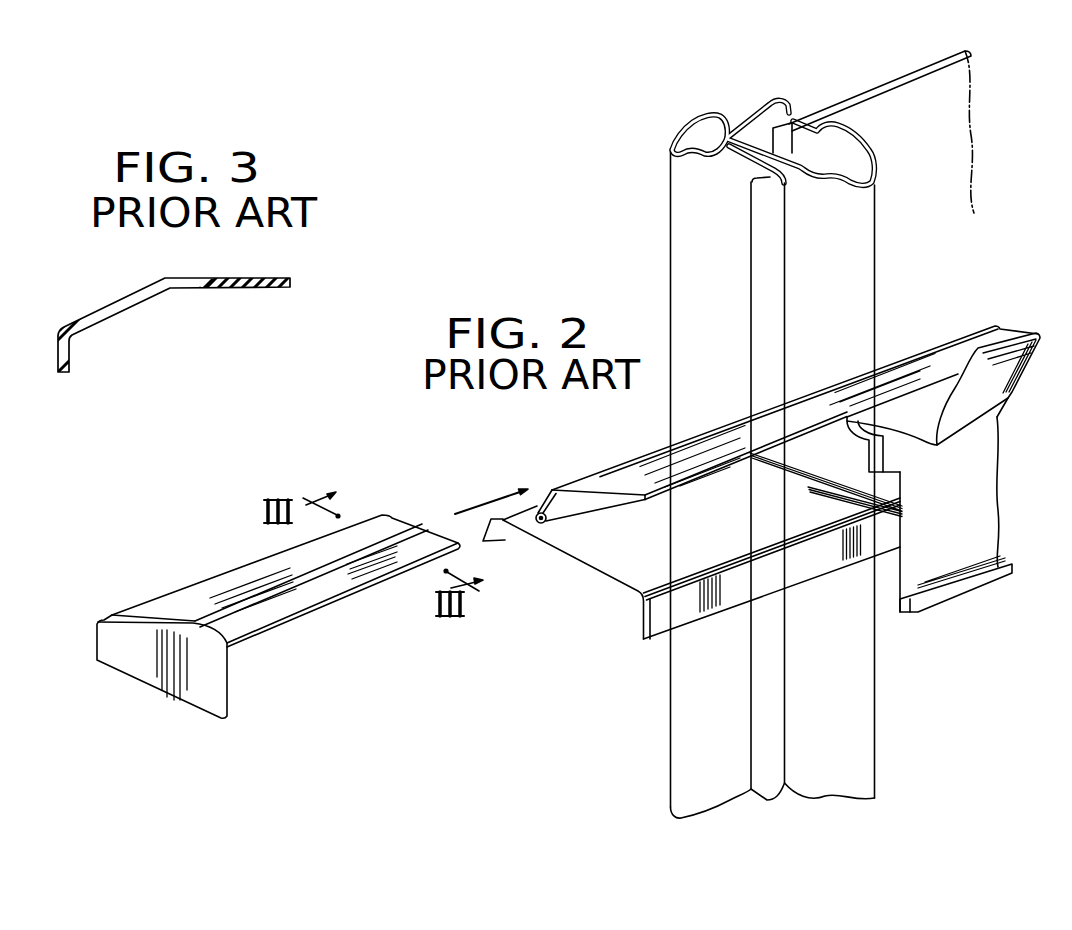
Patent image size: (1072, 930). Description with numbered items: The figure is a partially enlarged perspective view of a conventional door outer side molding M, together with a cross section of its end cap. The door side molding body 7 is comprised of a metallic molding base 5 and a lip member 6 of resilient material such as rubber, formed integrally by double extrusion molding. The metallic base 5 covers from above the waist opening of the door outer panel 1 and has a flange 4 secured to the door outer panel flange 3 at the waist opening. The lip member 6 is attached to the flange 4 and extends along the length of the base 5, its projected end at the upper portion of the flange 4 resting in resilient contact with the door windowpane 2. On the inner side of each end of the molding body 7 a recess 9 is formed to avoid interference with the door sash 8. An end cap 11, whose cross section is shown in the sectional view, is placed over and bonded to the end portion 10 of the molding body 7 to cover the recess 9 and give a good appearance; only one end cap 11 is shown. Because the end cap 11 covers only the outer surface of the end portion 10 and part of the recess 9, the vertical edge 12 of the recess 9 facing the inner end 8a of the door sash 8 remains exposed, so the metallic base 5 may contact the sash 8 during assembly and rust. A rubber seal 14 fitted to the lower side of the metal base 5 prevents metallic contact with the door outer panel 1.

In FIG. 2, the door outer panel 1 is at (610, 563).
In FIG. 2, the door windowpane 2 is at (964, 137).
In FIG. 2, the door outer panel flange 3 is at (643, 627).
In FIG. 2, the flange 4 is at (897, 578).
In FIG. 2, the metallic molding base 5 is at (923, 365).
In FIG. 2, the lip member 6 is at (1000, 412).
In FIG. 2, the door side molding body 7 is at (975, 529).
In FIG. 2, the door sash 8 is at (682, 131).
In FIG. 2, the inner end of door sash 8a is at (793, 107).
In FIG. 2, the recess 9 is at (731, 470).
In FIG. 2, the end portion 10 is at (626, 476).
In FIG. 3, the end cap 11 is at (111, 303).
In FIG. 2, the end cap 11 is at (203, 587).
In FIG. 2, the vertical edge 12 is at (868, 457).
In FIG. 2, the rubber seal 14 is at (547, 523).
In FIG. 2, the door outer side molding M is at (979, 322).